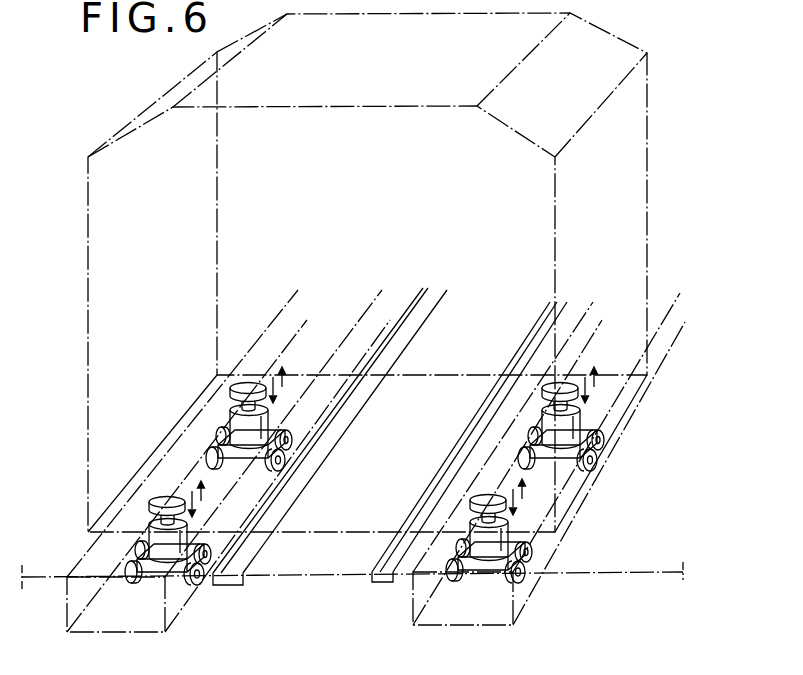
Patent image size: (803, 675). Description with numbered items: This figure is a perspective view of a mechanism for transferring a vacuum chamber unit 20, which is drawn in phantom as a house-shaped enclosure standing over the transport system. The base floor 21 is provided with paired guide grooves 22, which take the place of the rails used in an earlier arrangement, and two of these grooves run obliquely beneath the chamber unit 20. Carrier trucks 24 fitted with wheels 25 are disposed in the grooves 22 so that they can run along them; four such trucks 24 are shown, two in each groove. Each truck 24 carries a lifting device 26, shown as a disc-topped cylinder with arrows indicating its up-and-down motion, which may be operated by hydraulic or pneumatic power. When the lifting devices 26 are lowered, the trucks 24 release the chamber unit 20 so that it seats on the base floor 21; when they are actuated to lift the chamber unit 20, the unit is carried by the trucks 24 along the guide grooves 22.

The vacuum chamber unit 20 is at (640, 178).
The base floor 21 is at (648, 572).
The guide grooves 22 is at (110, 632).
The carrier trucks 24 is at (221, 438).
The wheels 25 is at (297, 444).
The lifting device 26 is at (248, 391).